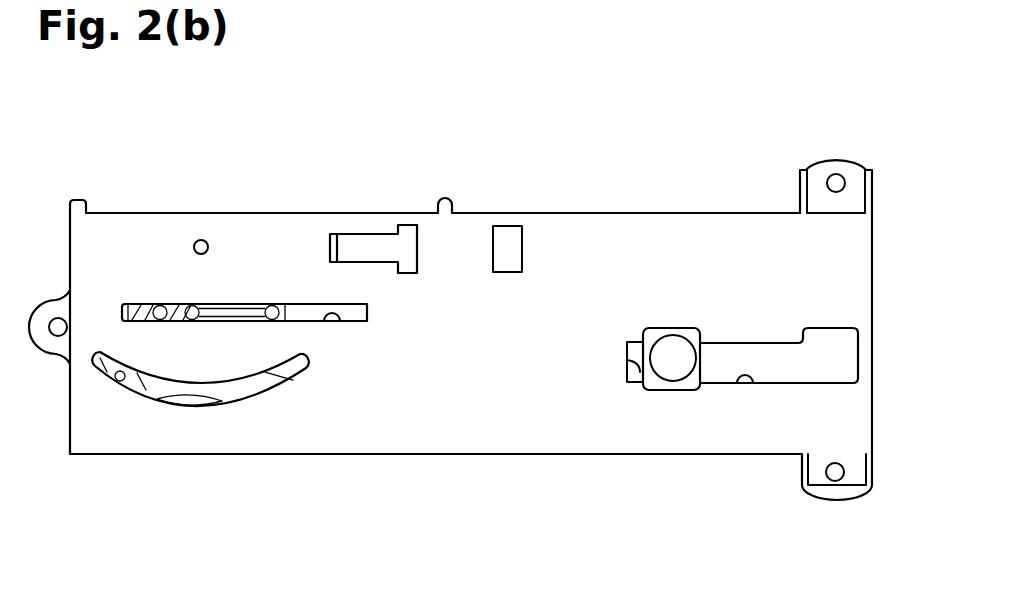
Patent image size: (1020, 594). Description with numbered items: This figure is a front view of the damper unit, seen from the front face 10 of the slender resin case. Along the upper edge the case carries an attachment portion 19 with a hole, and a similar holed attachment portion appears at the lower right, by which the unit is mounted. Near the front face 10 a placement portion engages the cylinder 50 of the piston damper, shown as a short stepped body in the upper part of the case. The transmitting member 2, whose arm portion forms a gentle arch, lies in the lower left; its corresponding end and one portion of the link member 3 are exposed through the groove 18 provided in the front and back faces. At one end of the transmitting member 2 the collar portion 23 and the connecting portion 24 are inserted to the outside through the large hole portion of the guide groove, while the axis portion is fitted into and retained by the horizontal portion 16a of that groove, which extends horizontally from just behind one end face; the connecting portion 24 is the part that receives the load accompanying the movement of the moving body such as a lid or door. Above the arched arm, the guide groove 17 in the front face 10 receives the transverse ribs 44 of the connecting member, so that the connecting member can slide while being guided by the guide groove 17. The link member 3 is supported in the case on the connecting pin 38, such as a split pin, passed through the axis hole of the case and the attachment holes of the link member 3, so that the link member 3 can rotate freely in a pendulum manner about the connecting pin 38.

The front face 10 is at (638, 244).
The attachment portion 19 is at (830, 160).
The horizontal portion 16a is at (755, 383).
The link member 3 is at (153, 304).
The transverse ribs 44 is at (248, 310).
The guide groove 17 is at (340, 321).
The connecting pin 38 is at (204, 243).
The cylinder 50 is at (370, 245).
The transmitting member 2 is at (238, 392).
The groove 18 is at (123, 382).
The collar portion 23 is at (679, 390).
The connecting portion 24 is at (663, 368).